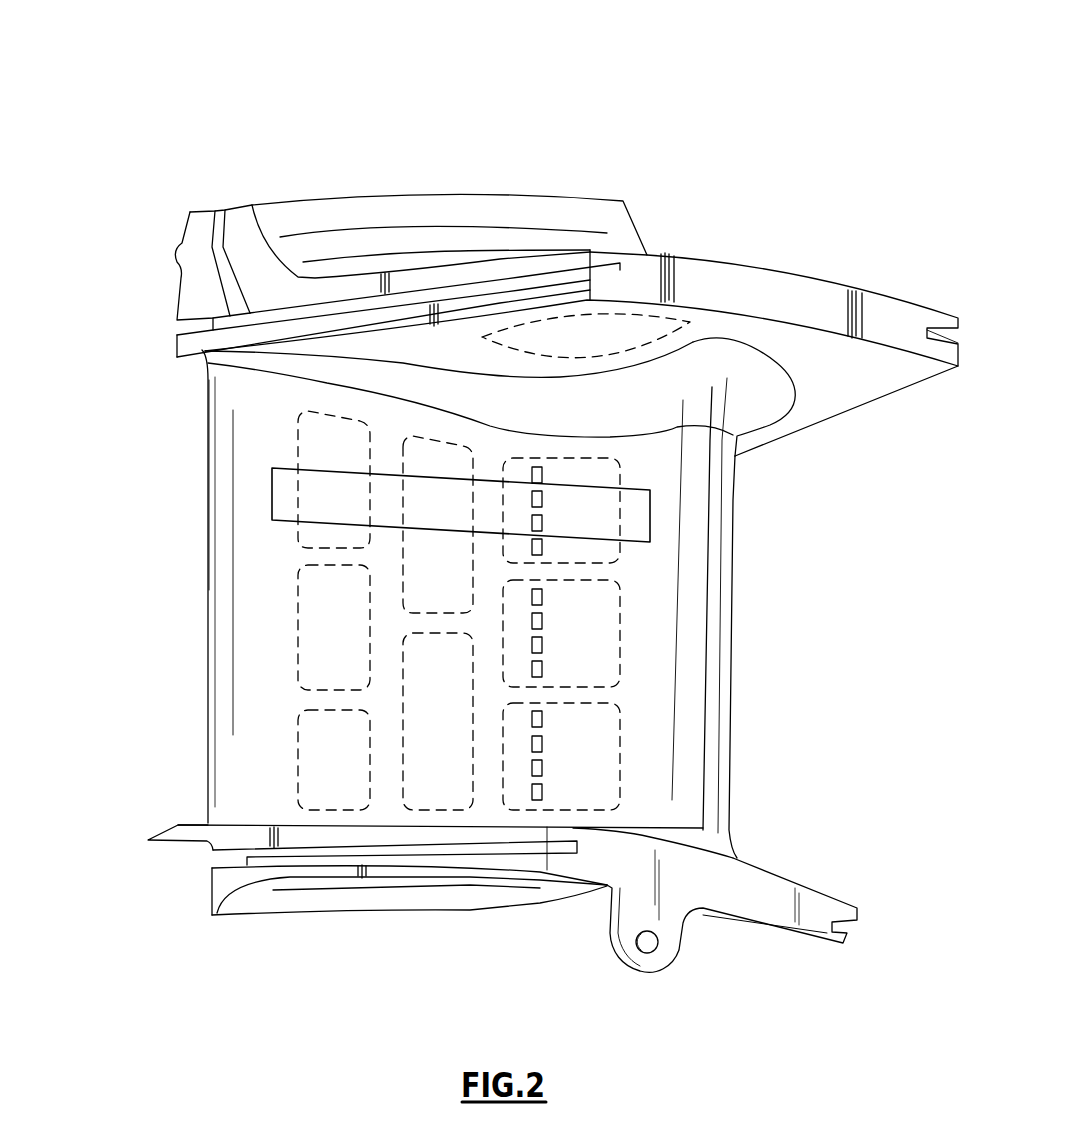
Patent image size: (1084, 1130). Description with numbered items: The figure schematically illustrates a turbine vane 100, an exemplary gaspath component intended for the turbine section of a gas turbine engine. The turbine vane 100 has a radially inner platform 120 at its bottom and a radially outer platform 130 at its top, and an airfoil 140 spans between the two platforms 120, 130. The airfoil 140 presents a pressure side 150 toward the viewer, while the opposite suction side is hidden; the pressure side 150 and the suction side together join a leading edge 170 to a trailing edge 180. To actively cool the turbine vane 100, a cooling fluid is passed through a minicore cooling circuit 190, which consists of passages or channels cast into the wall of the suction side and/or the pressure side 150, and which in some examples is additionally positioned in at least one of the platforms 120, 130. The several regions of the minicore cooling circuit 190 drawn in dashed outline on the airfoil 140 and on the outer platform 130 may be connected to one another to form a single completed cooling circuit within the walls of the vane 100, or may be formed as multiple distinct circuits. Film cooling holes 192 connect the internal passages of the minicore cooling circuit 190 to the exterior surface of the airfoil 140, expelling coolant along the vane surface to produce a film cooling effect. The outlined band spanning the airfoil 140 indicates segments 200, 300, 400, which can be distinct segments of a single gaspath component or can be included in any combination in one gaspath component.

The turbine vane 100 is at (283, 90).
The radially inner platform 120 is at (223, 885).
The radially outer platform 130 is at (686, 267).
The airfoil 140 is at (683, 693).
The pressure side 150 is at (652, 583).
The leading edge 170 is at (733, 521).
The trailing edge 180 is at (208, 593).
The minicore cooling circuit 190 is at (606, 351).
The film cooling holes 192 is at (537, 466).
The segment 200 is at (346, 500).
The segment 300 is at (346, 500).
The segment 400 is at (272, 494).